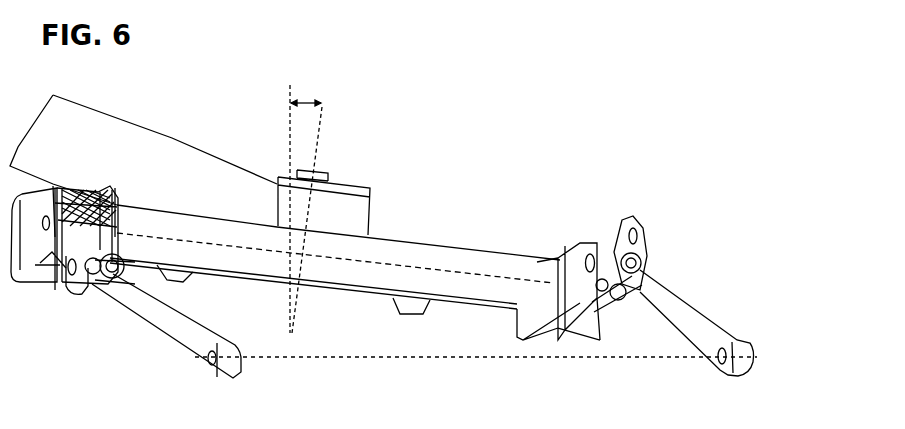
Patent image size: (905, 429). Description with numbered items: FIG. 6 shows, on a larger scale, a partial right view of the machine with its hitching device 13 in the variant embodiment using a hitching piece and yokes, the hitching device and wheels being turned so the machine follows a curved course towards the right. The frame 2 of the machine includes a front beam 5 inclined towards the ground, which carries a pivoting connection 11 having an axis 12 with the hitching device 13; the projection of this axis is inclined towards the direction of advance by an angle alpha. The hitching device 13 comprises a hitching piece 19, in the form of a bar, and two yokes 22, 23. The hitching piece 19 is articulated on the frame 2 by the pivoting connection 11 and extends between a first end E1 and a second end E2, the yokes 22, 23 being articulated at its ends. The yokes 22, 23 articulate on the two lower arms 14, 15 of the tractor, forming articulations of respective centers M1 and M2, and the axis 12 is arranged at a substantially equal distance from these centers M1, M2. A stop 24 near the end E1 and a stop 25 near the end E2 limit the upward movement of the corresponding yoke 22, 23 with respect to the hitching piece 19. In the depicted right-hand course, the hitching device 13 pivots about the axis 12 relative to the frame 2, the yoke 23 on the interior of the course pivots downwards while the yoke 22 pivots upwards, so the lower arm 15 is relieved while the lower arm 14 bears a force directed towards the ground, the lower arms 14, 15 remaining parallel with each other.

The frame 2 is at (172, 138).
The front beam 5 is at (205, 172).
The pivoting connection 11 is at (322, 177).
The axis 12 is at (318, 135).
The hitching device 13 is at (421, 242).
The lower arm 14 is at (690, 322).
The lower arm 15 is at (163, 330).
The hitching piece 19 is at (492, 268).
The yoke 22 is at (636, 245).
The yoke 23 is at (68, 280).
The stop 24 is at (553, 340).
The stop 25 is at (43, 272).
The center of articulation M1 is at (618, 298).
The center of articulation M2 is at (100, 290).
The first end E1 is at (597, 340).
The second end E2 is at (23, 262).